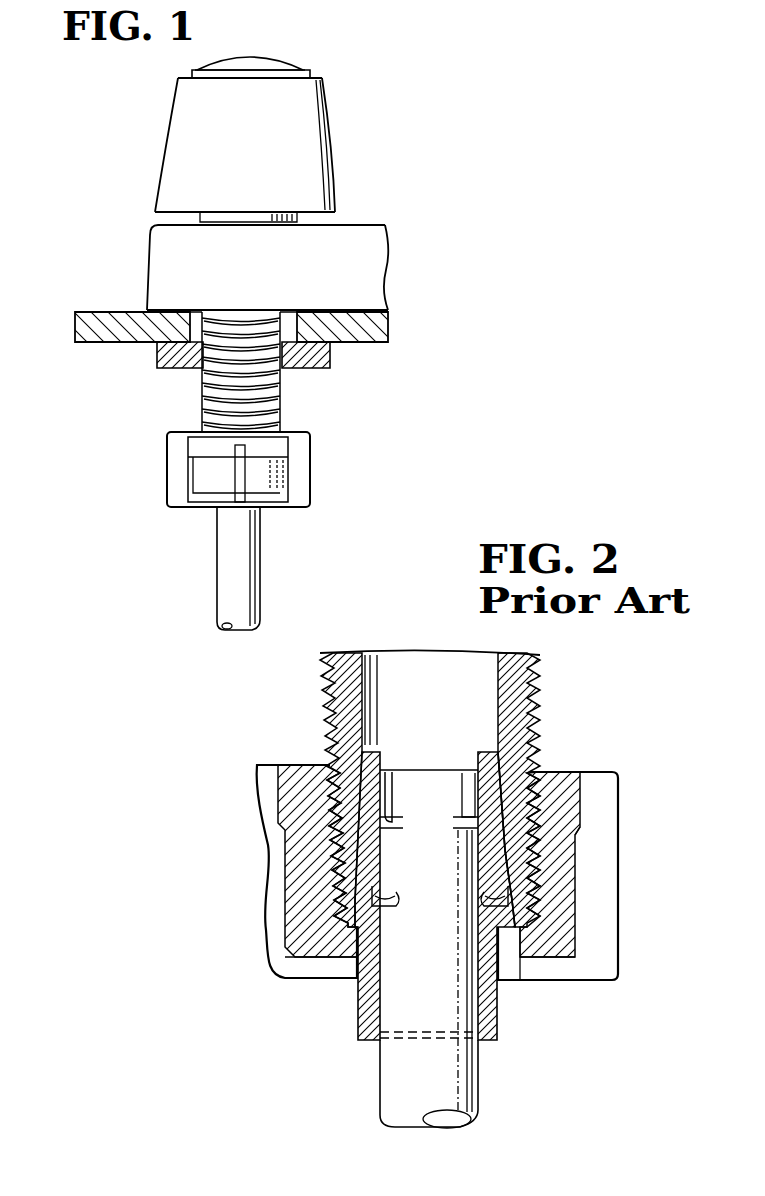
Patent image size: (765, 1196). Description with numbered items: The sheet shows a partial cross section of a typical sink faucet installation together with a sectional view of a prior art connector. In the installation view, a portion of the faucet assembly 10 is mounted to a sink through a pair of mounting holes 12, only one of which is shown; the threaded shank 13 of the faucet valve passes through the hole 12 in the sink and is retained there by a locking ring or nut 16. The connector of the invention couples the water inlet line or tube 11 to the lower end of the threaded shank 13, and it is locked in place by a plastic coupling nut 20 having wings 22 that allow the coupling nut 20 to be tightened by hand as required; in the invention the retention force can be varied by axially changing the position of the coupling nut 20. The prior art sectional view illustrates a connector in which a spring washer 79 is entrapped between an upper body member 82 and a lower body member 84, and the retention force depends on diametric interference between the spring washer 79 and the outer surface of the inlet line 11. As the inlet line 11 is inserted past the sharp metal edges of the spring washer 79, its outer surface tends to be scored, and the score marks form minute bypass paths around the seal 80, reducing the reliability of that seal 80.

In FIG. 1, the faucet assembly 10 is at (352, 192).
In FIG. 1, the water inlet line 11 is at (242, 553).
In FIG. 2, the water inlet line 11 is at (470, 1108).
In FIG. 1, the mounting hole 12 is at (183, 332).
In FIG. 1, the threaded shank 13 is at (282, 392).
In FIG. 2, the threaded shank 13 is at (537, 685).
In FIG. 1, the locking nut 16 is at (170, 368).
In FIG. 1, the coupling nut 20 is at (207, 483).
In FIG. 2, the coupling nut 20 is at (555, 948).
In FIG. 1, the wings 22 is at (302, 478).
In FIG. 2, the wings 22 is at (598, 787).
In FIG. 2, the spring washer 79 is at (483, 887).
In FIG. 2, the seal 80 is at (403, 770).
In FIG. 2, the upper body member 82 is at (507, 840).
In FIG. 2, the lower body member 84 is at (482, 1007).